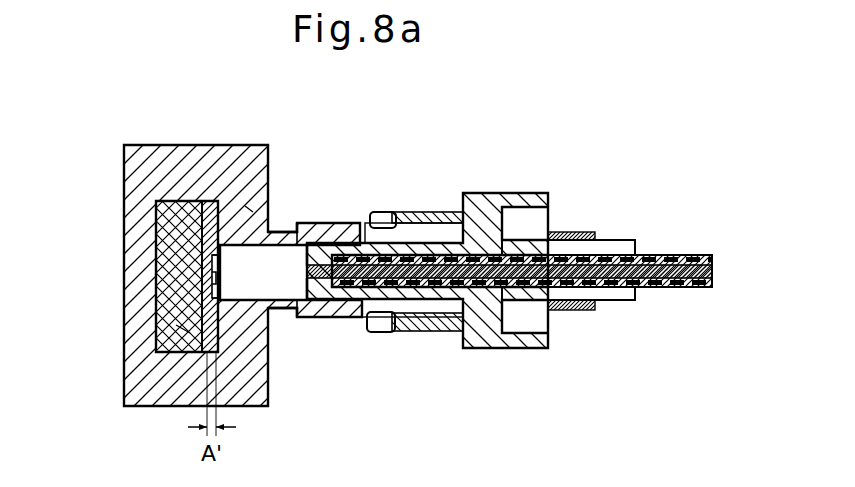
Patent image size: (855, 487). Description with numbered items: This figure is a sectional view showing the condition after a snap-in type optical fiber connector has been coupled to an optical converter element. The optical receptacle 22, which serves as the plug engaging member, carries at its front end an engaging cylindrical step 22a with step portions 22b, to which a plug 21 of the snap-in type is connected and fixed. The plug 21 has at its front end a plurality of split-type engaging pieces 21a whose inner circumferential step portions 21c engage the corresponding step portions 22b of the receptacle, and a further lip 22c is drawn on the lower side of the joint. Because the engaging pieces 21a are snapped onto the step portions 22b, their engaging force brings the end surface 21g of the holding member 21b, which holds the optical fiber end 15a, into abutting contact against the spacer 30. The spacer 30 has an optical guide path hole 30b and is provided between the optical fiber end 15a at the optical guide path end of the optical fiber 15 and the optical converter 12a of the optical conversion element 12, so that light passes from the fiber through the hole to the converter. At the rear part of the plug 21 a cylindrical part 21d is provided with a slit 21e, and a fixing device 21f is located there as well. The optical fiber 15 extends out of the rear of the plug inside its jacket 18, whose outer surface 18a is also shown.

The optical receptacle 22 is at (132, 167).
The engaging cylindrical step 22a is at (346, 224).
The step portion 22b is at (292, 229).
The lower hook lip 22c is at (415, 331).
The optical conversion element 12 is at (157, 247).
The optical converter 12a is at (157, 298).
The spacer 30 is at (210, 200).
The optical guide path hole 30b is at (250, 210).
The plug 21 is at (517, 196).
The split-type engaging pieces 21a is at (381, 213).
The holding member 21b is at (443, 321).
The inner circumferential step portions 21c is at (417, 213).
The cylindrical part 21d is at (636, 241).
The slit 21e is at (607, 239).
The fixing device 21f is at (585, 311).
The end surface 21g is at (306, 290).
The optical fiber jacket 18 is at (692, 255).
The jacket surface 18a is at (688, 291).
The optical fiber 15 is at (713, 268).
The optical fiber end 15a is at (306, 265).